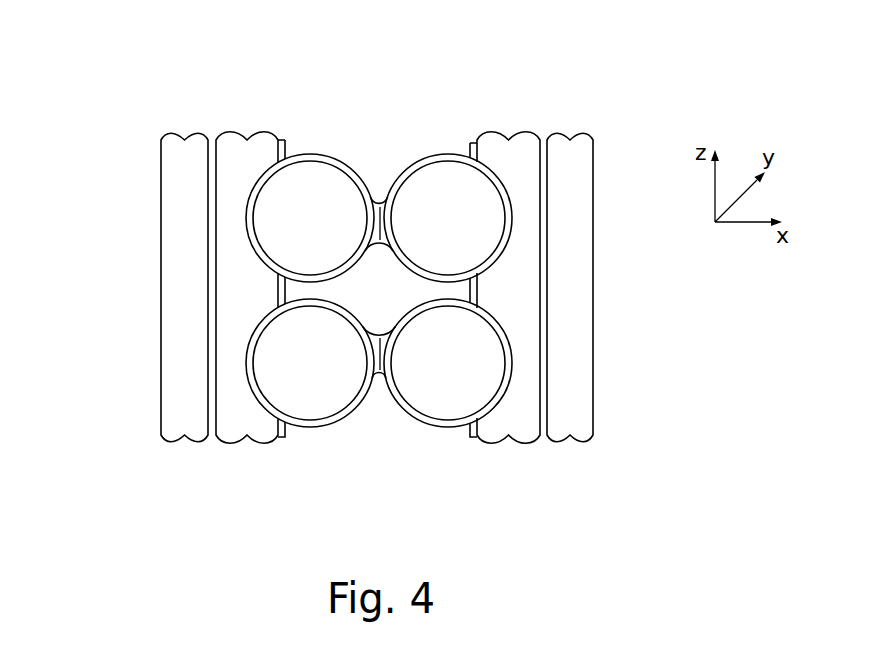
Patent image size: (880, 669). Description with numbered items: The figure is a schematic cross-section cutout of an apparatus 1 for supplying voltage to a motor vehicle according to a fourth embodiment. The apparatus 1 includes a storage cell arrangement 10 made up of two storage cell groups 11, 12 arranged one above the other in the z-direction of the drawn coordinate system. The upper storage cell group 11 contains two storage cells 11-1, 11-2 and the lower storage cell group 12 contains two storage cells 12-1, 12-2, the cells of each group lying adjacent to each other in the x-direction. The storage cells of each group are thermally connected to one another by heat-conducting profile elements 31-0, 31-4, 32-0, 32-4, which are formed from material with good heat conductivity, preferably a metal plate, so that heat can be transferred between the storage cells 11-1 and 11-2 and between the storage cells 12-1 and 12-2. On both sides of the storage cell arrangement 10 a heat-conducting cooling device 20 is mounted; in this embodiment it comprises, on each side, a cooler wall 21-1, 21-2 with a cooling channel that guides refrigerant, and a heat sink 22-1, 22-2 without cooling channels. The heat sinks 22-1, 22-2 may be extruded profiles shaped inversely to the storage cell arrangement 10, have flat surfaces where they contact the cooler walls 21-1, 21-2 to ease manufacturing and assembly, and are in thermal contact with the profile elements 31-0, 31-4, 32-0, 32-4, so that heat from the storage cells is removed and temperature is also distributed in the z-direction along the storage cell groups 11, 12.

The apparatus for supplying voltage 1 is at (66, 453).
The storage cell arrangement 10 is at (644, 75).
The heat-conducting cooling device 20 is at (545, 110).
The storage cell group 11 is at (236, 210).
The storage cell group 12 is at (236, 356).
The storage cell 11-1 is at (333, 235).
The storage cell 11-2 is at (477, 230).
The storage cell 12-1 is at (334, 373).
The storage cell 12-2 is at (474, 373).
The cooler wall 21-1 is at (174, 432).
The cooler wall 21-2 is at (570, 420).
The heat sink 22-1 is at (248, 434).
The heat sink 22-2 is at (515, 418).
The profile element 31-0 is at (310, 153).
The profile element 31-4 is at (381, 203).
The profile element 32-0 is at (379, 375).
The profile element 32-4 is at (396, 403).